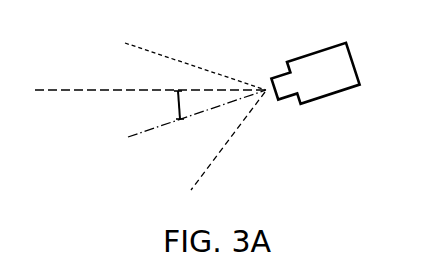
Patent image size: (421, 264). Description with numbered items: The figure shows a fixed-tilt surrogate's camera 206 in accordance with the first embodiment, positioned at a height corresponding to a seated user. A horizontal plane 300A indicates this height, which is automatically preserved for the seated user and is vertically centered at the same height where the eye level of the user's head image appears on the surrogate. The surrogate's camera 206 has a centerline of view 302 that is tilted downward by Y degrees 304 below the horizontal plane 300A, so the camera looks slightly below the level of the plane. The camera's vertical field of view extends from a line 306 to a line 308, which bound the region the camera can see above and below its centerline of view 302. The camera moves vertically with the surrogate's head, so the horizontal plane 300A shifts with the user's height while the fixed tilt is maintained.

The surrogate's camera 206 is at (335, 86).
The horizontal plane 300A is at (125, 89).
The centerline of view 302 is at (136, 134).
The Y degrees 304 is at (177, 103).
The line 306 is at (264, 97).
The line 308 is at (189, 63).